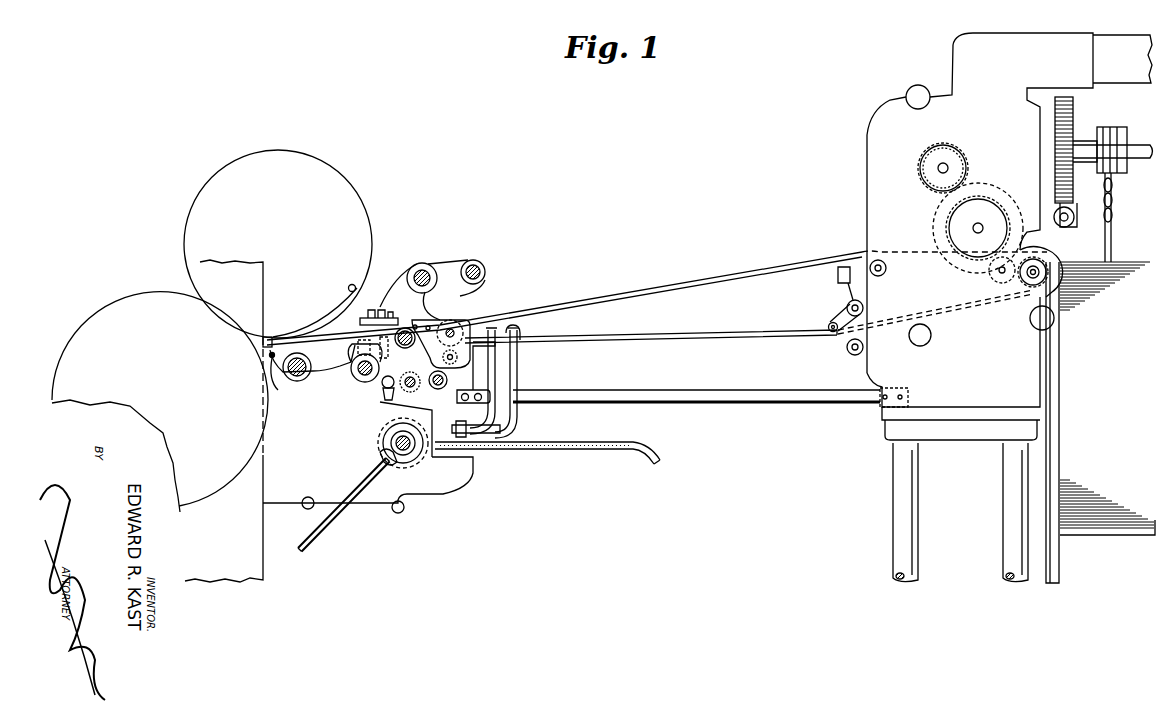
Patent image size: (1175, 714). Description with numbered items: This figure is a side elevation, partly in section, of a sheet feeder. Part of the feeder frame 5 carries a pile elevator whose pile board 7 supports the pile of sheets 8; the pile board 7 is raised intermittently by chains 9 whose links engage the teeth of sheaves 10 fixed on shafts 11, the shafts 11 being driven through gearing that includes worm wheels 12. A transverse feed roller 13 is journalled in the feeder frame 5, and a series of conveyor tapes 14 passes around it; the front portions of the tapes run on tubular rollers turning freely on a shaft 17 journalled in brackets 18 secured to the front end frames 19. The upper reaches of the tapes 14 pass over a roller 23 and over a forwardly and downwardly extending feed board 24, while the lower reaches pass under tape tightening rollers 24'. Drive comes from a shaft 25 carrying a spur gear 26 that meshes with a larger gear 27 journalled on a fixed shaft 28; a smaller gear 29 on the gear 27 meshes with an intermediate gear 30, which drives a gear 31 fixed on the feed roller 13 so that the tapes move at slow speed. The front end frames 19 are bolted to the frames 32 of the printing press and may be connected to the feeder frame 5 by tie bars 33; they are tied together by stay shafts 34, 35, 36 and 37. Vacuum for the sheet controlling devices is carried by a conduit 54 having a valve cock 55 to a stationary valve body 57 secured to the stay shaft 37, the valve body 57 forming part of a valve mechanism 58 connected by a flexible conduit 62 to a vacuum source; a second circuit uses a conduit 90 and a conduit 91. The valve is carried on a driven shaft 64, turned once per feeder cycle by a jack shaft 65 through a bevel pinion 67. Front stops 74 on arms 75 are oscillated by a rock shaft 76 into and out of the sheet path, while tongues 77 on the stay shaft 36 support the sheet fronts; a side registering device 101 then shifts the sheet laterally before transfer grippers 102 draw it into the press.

The feeder frame 5 is at (997, 38).
The pile board 7 is at (1110, 530).
The pile of sheets 8 is at (1142, 262).
The chains 9 is at (1113, 210).
The sheaves 10 is at (1117, 128).
The shafts 11 is at (1136, 146).
The worm wheels 12 is at (1073, 107).
The feed roller 13 is at (1018, 292).
The conveyor tapes 14 is at (796, 266).
The shaft 17 is at (454, 326).
The brackets 18 is at (428, 326).
The front end frames 19 is at (452, 492).
The roller 23 is at (884, 275).
The feed board 24 is at (651, 317).
The tape tightening rollers 24' is at (912, 312).
The shaft 25 is at (945, 166).
The spur gear 26 is at (924, 172).
The larger gear 27 is at (976, 194).
The shaft 28 is at (974, 229).
The smaller gear 29 is at (995, 210).
The intermediate gear 30 is at (999, 278).
The gear 31 is at (1051, 256).
The frames of the printing press 32 is at (268, 574).
The tie bars 33 is at (748, 398).
The stay shaft 34 is at (475, 261).
The stay shaft 35 is at (422, 263).
The stay shaft 36 is at (412, 345).
The stay shaft 37 is at (405, 392).
The conduit 54 is at (490, 378).
The valve cock 55 is at (462, 438).
The valve body 57 is at (395, 418).
The valve mechanism 58 is at (374, 446).
The flexible conduit 62 is at (565, 450).
The driven shaft 64 is at (408, 458).
The jack shaft 65 is at (338, 516).
The bevel pinion 67 is at (380, 456).
The front stops or registering devices 74 is at (263, 344).
The arms 75 is at (276, 372).
The rock shaft 76 is at (308, 374).
The tongues 77 is at (327, 334).
The conduit 90 is at (520, 332).
The conduit 91 is at (518, 382).
The side registering device 101 is at (363, 316).
The transfer grippers 102 is at (348, 286).